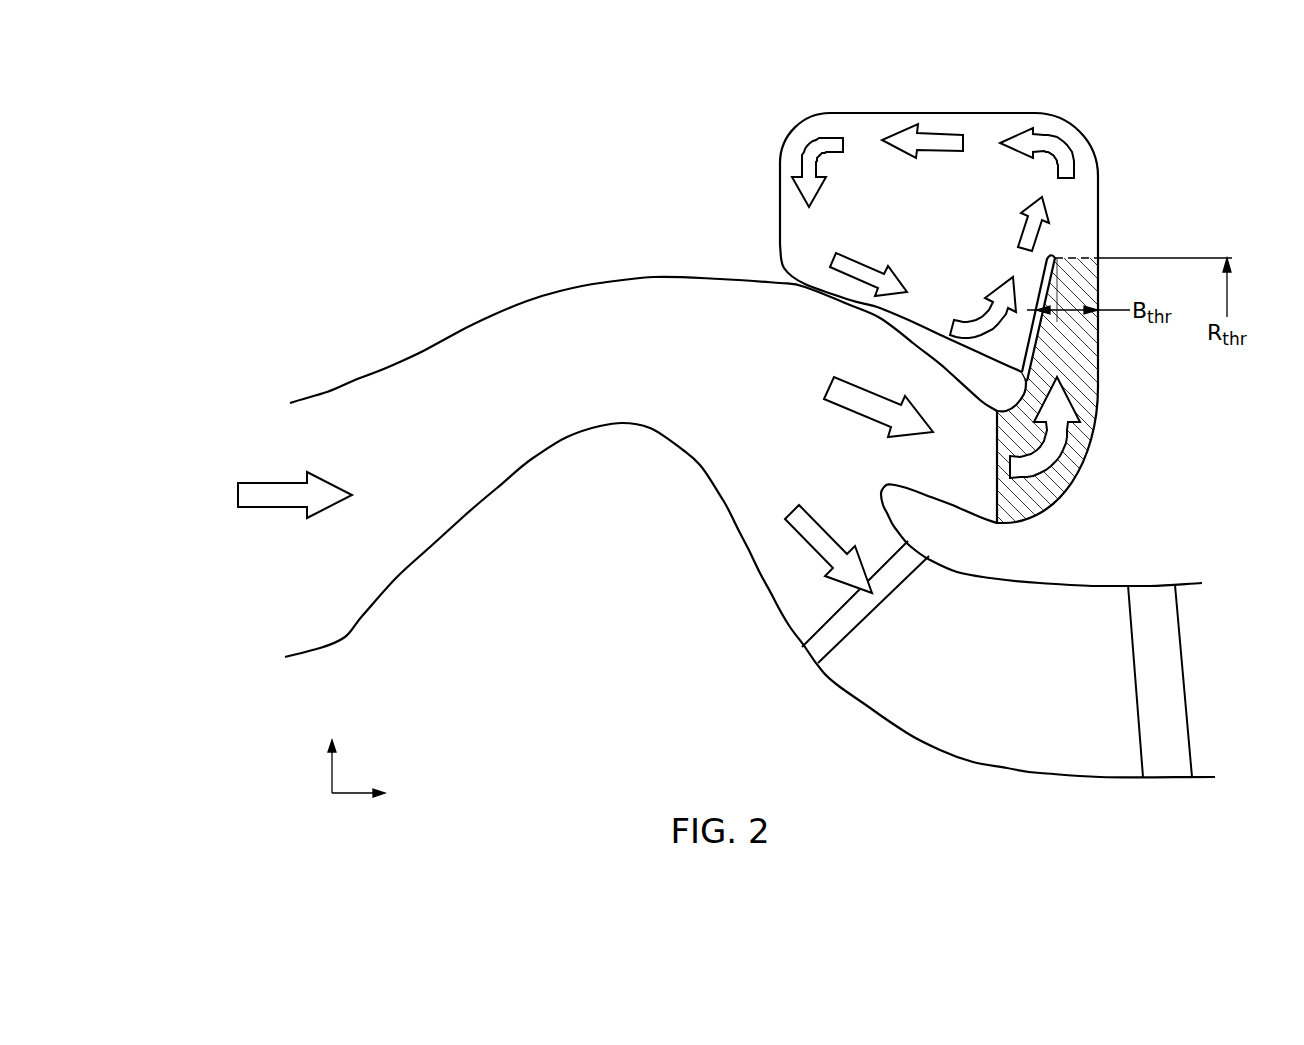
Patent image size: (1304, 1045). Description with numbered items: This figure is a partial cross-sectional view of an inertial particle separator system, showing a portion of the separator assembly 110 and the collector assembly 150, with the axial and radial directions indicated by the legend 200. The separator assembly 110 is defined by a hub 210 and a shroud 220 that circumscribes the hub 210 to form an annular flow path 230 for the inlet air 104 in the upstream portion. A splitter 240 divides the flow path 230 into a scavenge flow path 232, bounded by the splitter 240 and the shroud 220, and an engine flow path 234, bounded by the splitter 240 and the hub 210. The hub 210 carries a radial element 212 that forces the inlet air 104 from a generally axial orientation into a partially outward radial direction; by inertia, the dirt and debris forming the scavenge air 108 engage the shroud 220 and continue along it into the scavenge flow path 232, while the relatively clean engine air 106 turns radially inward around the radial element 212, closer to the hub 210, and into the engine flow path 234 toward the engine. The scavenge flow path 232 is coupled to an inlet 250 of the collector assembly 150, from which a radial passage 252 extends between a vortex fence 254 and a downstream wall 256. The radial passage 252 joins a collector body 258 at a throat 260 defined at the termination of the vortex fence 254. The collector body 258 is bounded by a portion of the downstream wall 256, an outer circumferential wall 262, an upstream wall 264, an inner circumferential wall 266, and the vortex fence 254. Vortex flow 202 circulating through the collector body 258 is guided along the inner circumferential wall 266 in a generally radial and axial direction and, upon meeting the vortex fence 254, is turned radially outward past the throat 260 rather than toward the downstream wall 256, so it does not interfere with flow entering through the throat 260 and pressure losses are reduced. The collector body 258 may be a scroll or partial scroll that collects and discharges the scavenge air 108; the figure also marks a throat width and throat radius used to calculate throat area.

The inlet air 104 is at (268, 510).
The engine air 106 is at (800, 505).
The scavenge air 108 is at (826, 387).
The separator assembly 110 is at (318, 198).
The collector assembly 150 is at (778, 112).
The legend 200 is at (305, 762).
The vortex flow 202 is at (813, 135).
The hub 210 is at (537, 478).
The radial element 212 is at (620, 428).
The shroud 220 is at (513, 297).
The annular flow path 230 is at (387, 477).
The scavenge flow path 232 is at (930, 474).
The engine flow path 234 is at (942, 670).
The splitter 240 is at (885, 484).
The inlet 250 is at (1030, 508).
The radial passage 252 is at (1098, 370).
The vortex fence 254 is at (1042, 278).
The downstream wall 256 is at (1099, 283).
The collector body 258 is at (855, 213).
The throat 260 is at (1088, 253).
The outer circumferential wall 262 is at (903, 113).
The upstream wall 264 is at (780, 170).
The inner circumferential wall 266 is at (812, 287).